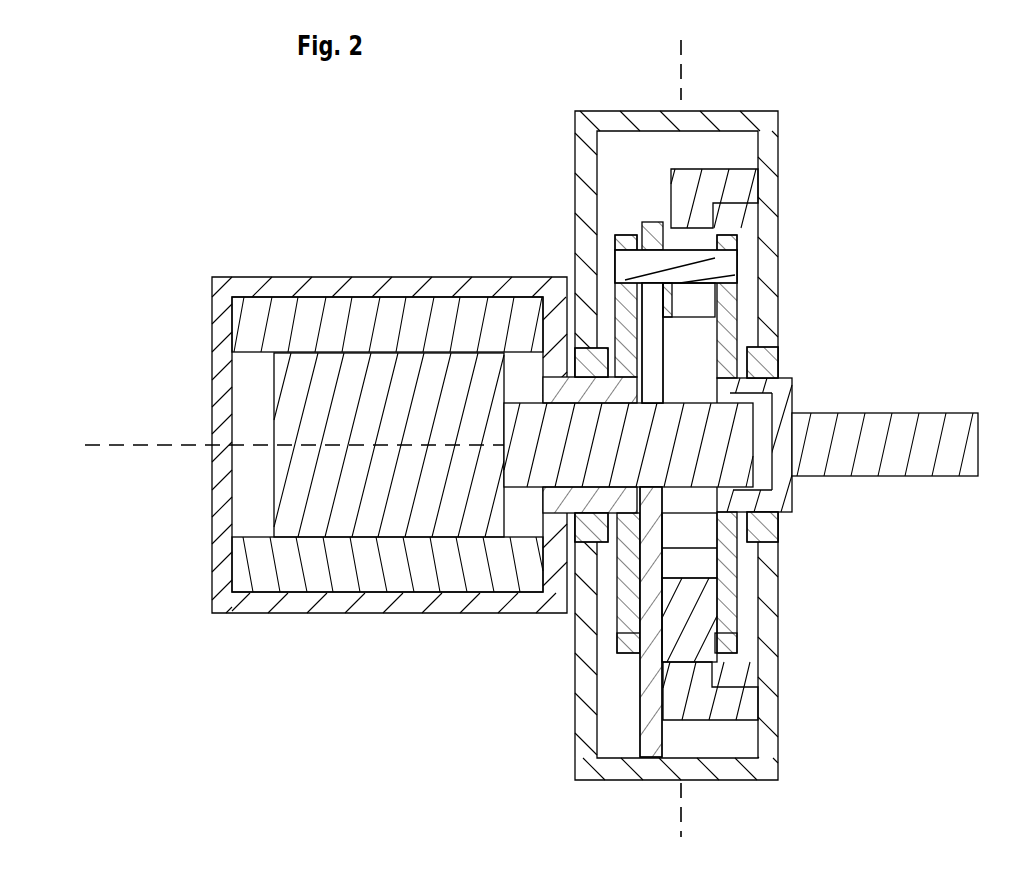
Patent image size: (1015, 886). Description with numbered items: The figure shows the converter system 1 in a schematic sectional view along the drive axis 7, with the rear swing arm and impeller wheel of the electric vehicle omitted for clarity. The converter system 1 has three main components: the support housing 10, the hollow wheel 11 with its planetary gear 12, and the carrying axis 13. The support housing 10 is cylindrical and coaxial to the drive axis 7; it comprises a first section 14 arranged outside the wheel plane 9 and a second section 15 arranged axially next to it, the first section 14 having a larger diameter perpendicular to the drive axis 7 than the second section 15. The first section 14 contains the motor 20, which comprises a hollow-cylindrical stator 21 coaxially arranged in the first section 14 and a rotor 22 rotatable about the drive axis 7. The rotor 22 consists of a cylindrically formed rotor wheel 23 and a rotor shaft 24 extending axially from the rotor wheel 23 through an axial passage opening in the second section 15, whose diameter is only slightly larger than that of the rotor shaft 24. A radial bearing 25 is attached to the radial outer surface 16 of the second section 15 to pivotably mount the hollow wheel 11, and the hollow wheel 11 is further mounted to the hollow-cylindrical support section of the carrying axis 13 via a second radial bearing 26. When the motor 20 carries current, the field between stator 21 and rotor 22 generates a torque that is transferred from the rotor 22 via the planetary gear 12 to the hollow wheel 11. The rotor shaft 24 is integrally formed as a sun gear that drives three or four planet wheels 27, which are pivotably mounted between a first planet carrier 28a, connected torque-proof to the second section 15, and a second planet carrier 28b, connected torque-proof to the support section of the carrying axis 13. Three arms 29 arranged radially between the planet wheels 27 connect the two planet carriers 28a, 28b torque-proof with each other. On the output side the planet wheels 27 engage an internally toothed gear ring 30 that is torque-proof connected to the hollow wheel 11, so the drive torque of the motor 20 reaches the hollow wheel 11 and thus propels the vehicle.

The converter system 1 is at (749, 403).
The drive axis 7 is at (110, 447).
The wheel plane 9 is at (680, 827).
The support housing 10 is at (348, 290).
The hollow wheel 11 is at (775, 160).
The planetary gear 12 is at (749, 445).
The carrying axis 13 is at (912, 467).
The first section 14 is at (389, 467).
The second section 15 is at (618, 390).
The radial outer surface 16 is at (575, 377).
The motor 20 is at (313, 450).
The stator 21 is at (485, 300).
The rotor 22 is at (258, 512).
The rotor wheel 23 is at (293, 365).
The rotor shaft 24 is at (735, 397).
The radial bearing 25 is at (592, 357).
The second radial bearing 26 is at (768, 360).
The planet wheels 27 is at (650, 233).
The first planet carrier 28a is at (623, 242).
The second planet carrier 28b is at (727, 240).
The arms 29 is at (722, 268).
The gear ring 30 is at (710, 178).